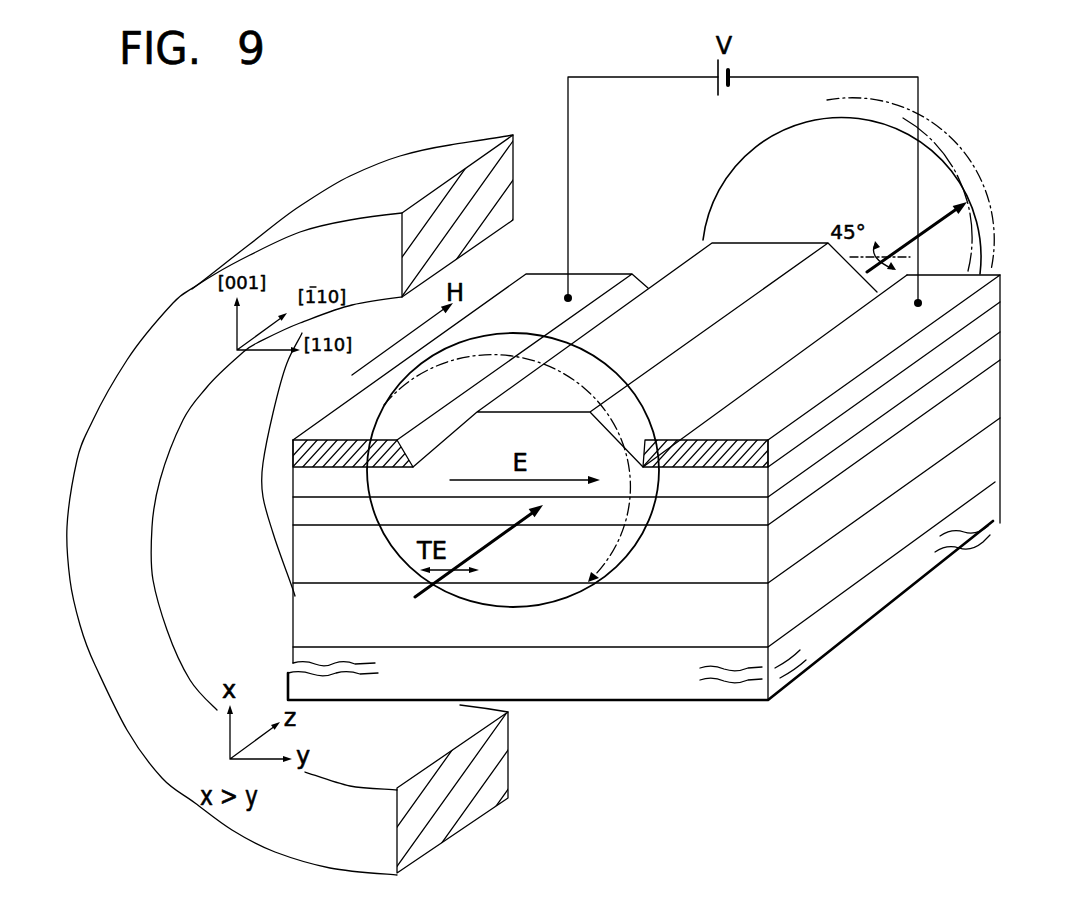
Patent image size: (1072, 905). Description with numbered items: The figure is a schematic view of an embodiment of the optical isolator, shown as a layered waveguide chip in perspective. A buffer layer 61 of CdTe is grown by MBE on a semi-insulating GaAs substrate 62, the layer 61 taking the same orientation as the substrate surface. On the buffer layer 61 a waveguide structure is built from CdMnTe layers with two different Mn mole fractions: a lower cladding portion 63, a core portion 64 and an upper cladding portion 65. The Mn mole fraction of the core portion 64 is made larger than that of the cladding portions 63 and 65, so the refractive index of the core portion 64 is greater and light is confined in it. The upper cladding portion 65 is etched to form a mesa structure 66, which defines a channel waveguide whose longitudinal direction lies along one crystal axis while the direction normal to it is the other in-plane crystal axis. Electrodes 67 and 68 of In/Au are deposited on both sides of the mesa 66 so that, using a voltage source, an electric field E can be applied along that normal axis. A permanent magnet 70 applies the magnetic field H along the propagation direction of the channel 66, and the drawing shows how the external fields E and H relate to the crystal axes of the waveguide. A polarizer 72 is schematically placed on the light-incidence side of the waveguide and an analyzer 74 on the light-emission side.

The buffer layer 61 is at (307, 610).
The substrate 62 is at (608, 700).
The lower cladding portion 63 is at (307, 550).
The core portion 64 is at (300, 508).
The upper cladding portion 65 is at (300, 477).
The mesa structure 66 is at (678, 272).
The electrode 67 is at (294, 443).
The electrode 68 is at (985, 288).
The permanent magnet 70 is at (393, 168).
The polarizer 72 is at (658, 417).
The analyzer 74 is at (972, 165).